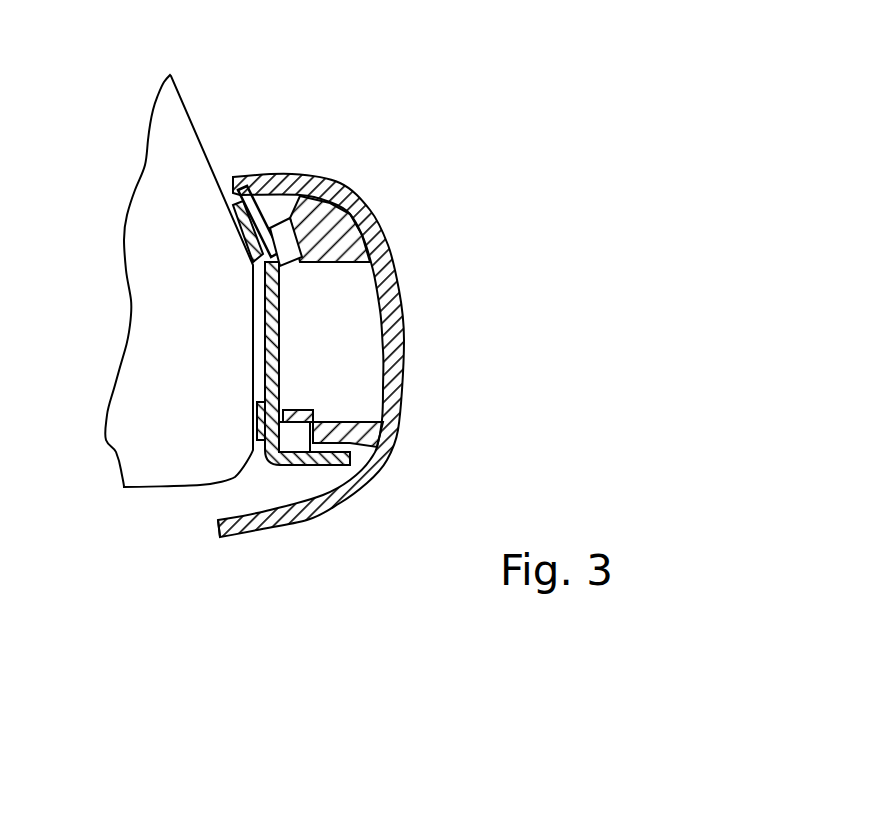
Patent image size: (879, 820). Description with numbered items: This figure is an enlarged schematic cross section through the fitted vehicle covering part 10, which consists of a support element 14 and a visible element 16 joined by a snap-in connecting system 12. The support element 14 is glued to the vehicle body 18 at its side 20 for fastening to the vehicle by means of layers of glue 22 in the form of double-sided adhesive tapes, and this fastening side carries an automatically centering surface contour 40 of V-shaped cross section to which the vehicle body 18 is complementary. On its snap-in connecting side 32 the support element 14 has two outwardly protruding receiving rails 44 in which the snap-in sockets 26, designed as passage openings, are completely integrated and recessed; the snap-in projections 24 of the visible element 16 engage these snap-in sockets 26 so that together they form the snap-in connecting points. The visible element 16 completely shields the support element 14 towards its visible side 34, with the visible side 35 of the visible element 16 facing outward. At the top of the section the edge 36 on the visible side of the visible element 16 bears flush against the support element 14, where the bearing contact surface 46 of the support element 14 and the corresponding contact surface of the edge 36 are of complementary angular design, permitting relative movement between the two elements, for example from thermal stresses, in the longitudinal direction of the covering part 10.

The vehicle covering part 10 is at (447, 102).
The snap-in connecting system 12 is at (302, 193).
The support element 14 is at (293, 442).
The visible element 16 is at (373, 420).
The vehicle body 18 is at (178, 128).
The side for fastening to the vehicle 20 is at (250, 456).
The layers of glue 22 is at (233, 225).
The snap-in projections 24 is at (340, 227).
The snap-in sockets 26 is at (290, 250).
The snap-in connecting side 32 is at (289, 363).
The visible side of the support element 34 is at (281, 315).
The visible side of the visible element 35 is at (432, 423).
The edge on the visible side 36 is at (229, 170).
The automatically centering surface contour 40 is at (256, 327).
The receiving rails 44 is at (290, 207).
The bearing contact surface 46 is at (268, 210).